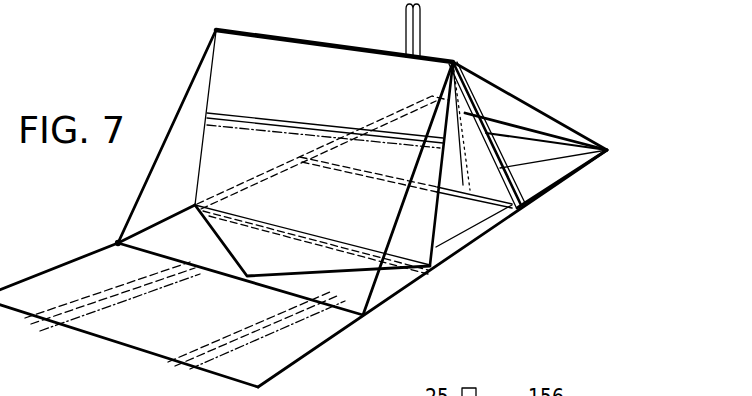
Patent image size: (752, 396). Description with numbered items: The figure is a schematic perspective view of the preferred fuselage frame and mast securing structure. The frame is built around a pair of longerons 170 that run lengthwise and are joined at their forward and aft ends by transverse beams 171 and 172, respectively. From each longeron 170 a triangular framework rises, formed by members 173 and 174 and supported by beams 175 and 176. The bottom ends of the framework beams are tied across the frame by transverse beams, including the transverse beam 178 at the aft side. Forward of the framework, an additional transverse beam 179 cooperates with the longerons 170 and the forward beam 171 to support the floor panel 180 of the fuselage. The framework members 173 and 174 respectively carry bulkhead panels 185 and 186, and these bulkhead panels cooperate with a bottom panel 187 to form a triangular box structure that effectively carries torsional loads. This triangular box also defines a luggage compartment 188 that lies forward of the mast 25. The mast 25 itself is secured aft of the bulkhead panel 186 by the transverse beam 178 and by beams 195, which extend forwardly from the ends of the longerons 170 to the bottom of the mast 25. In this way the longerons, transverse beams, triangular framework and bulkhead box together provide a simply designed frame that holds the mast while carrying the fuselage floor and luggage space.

The mast 25 is at (421, 40).
The longerons 170 is at (70, 262).
The transverse beam 171 is at (72, 336).
The transverse beam 172 is at (536, 138).
The triangular framework member 173 is at (441, 256).
The triangular framework member 174 is at (528, 198).
The beam 175 is at (143, 180).
The beam 176 is at (515, 85).
The transverse beam 178 is at (505, 222).
The transverse beam 179 is at (117, 243).
The floor panel 180 is at (172, 348).
The bulkhead panel 185 is at (217, 159).
The bulkhead panel 186 is at (432, 97).
The bottom panel 187 is at (463, 232).
The luggage compartment 188 is at (460, 126).
The beams 195 is at (574, 168).